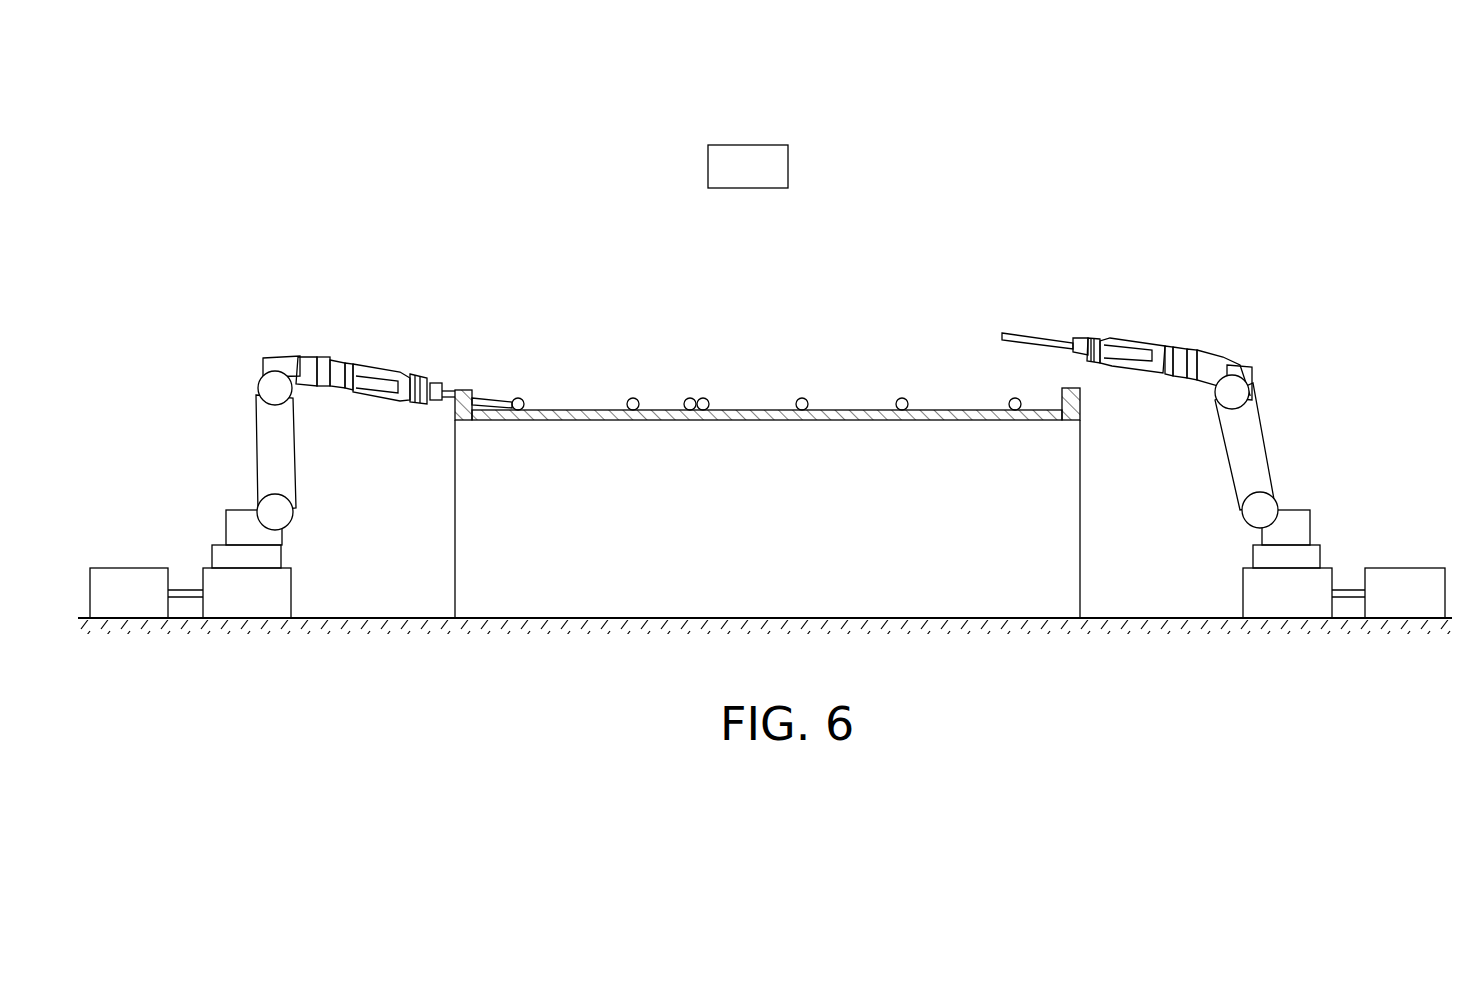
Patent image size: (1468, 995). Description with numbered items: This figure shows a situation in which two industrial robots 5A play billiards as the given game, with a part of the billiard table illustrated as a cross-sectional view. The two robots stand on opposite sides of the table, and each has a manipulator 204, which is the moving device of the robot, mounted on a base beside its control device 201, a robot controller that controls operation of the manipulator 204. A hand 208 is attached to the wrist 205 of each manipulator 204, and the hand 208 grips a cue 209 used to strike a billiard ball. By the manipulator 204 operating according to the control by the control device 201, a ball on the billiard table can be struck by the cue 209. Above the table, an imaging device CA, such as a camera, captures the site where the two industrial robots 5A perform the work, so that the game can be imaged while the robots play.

The industrial robot 5A is at (763, 400).
The control device 201 is at (144, 572).
The manipulator 204 is at (262, 458).
The wrist 205 is at (417, 407).
The hand 208 is at (433, 402).
The cue 209 is at (493, 398).
The imaging device CA is at (762, 153).